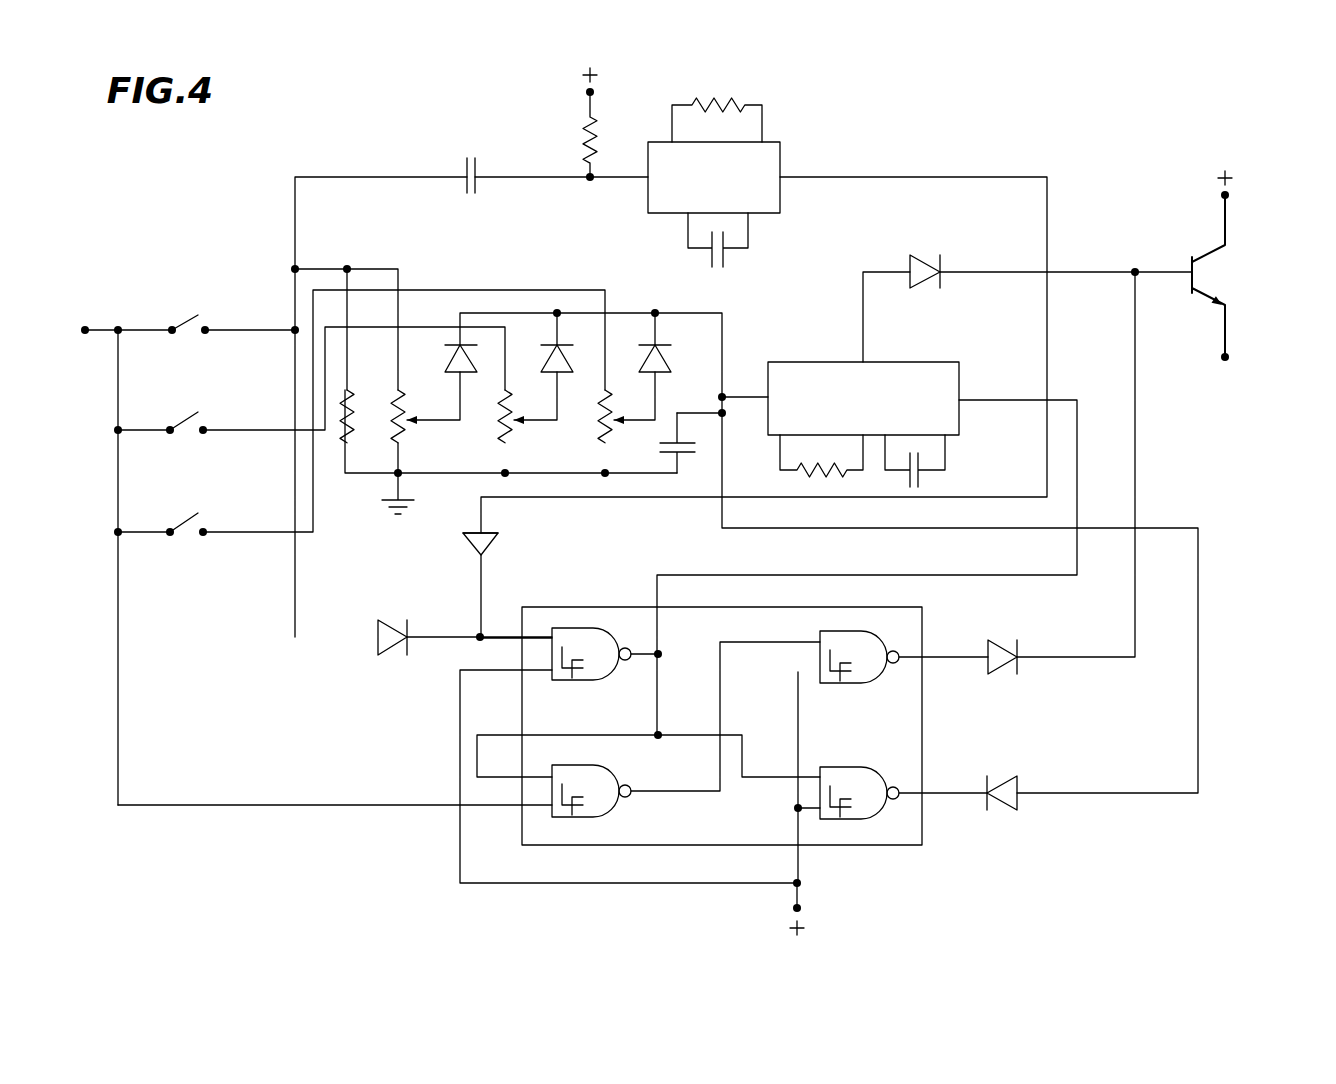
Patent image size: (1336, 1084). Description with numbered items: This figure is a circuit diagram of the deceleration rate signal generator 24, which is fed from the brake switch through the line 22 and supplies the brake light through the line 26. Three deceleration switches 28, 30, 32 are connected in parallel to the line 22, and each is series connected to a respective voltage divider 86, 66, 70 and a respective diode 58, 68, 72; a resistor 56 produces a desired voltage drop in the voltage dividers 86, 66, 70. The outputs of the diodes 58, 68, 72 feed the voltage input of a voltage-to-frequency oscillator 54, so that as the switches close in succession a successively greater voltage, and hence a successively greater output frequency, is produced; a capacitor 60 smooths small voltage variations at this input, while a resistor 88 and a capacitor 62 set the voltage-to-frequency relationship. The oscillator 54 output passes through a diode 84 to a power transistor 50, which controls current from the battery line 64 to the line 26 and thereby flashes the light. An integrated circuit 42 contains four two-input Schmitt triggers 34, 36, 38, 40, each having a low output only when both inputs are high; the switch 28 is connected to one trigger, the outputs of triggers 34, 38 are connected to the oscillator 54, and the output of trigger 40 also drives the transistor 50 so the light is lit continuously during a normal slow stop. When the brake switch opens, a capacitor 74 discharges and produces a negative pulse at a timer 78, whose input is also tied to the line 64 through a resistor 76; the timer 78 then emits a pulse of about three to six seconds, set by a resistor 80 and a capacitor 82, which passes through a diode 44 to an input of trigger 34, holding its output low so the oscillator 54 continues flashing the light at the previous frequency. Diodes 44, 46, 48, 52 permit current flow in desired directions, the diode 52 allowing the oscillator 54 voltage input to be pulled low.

The line 22 is at (103, 328).
The signal generator 24 is at (1092, 149).
The line 26 is at (1227, 340).
The switch 28 is at (188, 315).
The switch 30 is at (187, 413).
The switch 32 is at (187, 523).
The Schmitt trigger 34 is at (585, 680).
The Schmitt trigger 36 is at (597, 817).
The Schmitt trigger 38 is at (853, 818).
The Schmitt trigger 40 is at (843, 683).
The integrated circuit 42 is at (903, 851).
The diode 44 is at (495, 548).
The diode 46 is at (380, 655).
The diode 48 is at (1018, 652).
The power transistor 50 is at (1190, 268).
The diode 52 is at (1018, 785).
The oscillator 54 is at (895, 362).
The resistor 56 is at (347, 428).
The diode 58 is at (445, 347).
The capacitor 60 is at (660, 443).
The capacitor 62 is at (920, 487).
The line 64 is at (585, 107).
The voltage divider 66 is at (497, 428).
The diode 68 is at (547, 372).
The voltage divider 70 is at (600, 425).
The diode 72 is at (668, 372).
The capacitor 74 is at (462, 162).
The resistor 76 is at (585, 120).
The timer 78 is at (782, 168).
The resistor 80 is at (708, 103).
The capacitor 82 is at (723, 265).
The diode 84 is at (920, 255).
The voltage divider 86 is at (395, 420).
The resistor 88 is at (797, 478).